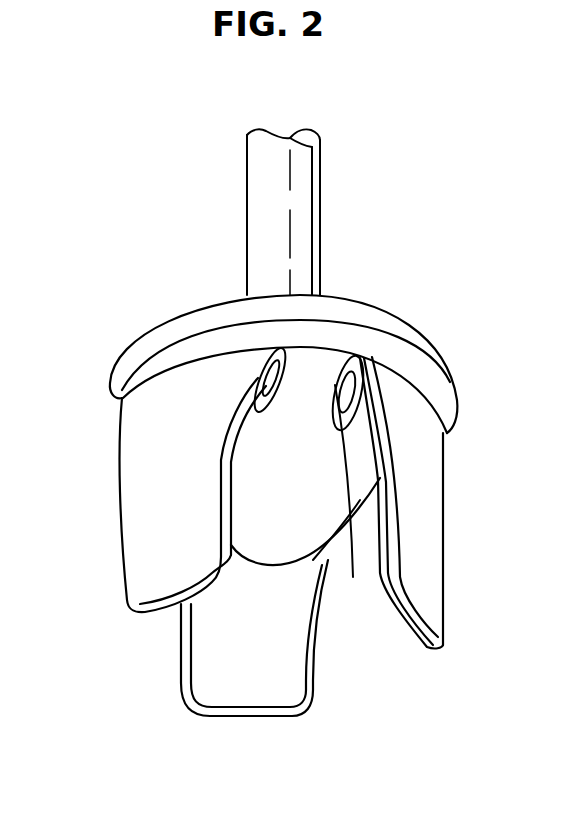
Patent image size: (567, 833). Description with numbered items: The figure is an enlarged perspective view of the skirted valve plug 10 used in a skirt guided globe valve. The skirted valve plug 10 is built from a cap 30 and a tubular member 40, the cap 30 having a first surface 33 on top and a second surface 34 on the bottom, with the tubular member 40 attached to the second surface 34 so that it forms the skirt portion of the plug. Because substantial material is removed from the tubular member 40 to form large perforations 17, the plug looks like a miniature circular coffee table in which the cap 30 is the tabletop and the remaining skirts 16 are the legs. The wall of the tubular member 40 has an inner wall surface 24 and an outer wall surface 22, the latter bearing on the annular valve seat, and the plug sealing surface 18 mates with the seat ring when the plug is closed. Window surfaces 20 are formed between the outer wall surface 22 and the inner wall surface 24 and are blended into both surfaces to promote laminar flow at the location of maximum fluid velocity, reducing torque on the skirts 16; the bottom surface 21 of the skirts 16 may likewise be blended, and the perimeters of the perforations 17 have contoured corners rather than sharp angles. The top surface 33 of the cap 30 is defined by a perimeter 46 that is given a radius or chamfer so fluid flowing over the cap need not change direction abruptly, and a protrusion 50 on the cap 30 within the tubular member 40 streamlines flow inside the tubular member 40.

The skirted valve plug 10 is at (52, 205).
The first surface 33 is at (331, 286).
The cap 30 is at (417, 331).
The perimeter 46 is at (450, 368).
The plug sealing surface 18 is at (113, 385).
The tubular member 40 is at (257, 380).
The skirts 16 is at (133, 578).
The outer wall surface 22 is at (432, 493).
The window surfaces 20 is at (382, 600).
The second surface 34 is at (352, 496).
The protrusion 50 is at (292, 510).
The perforations 17 is at (332, 618).
The bottom surface 21 is at (207, 710).
The inner wall surface 24 is at (243, 678).